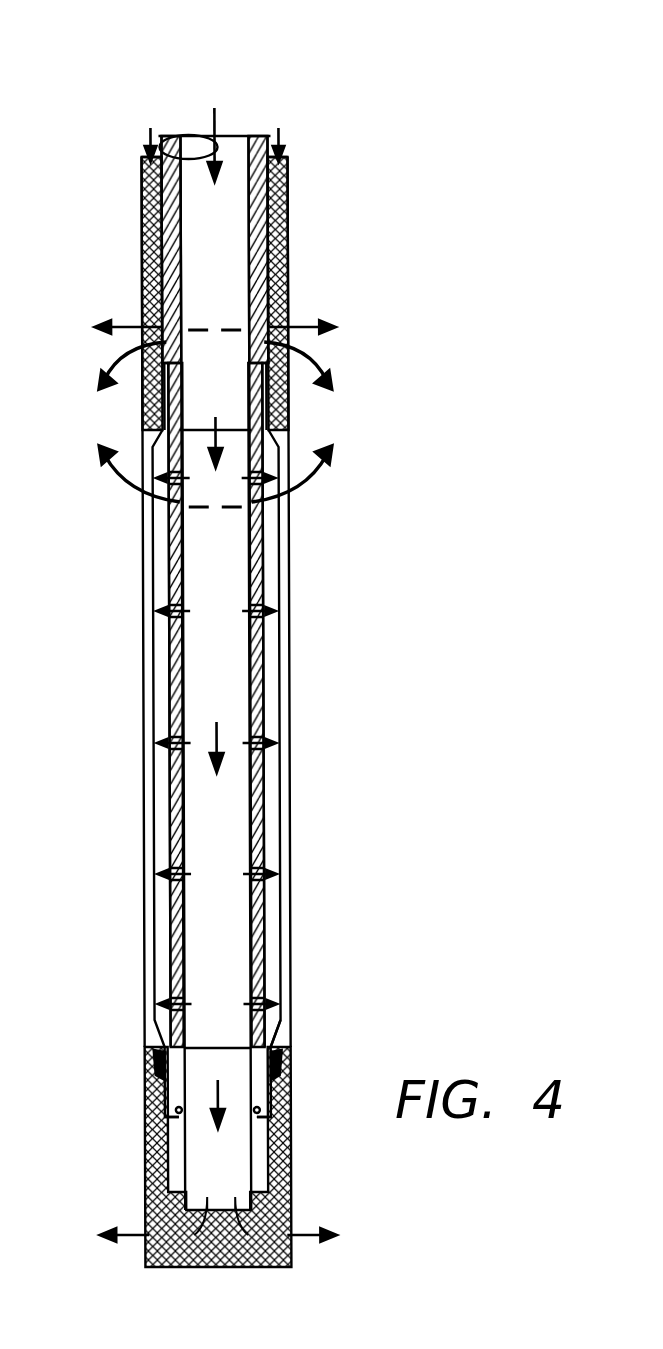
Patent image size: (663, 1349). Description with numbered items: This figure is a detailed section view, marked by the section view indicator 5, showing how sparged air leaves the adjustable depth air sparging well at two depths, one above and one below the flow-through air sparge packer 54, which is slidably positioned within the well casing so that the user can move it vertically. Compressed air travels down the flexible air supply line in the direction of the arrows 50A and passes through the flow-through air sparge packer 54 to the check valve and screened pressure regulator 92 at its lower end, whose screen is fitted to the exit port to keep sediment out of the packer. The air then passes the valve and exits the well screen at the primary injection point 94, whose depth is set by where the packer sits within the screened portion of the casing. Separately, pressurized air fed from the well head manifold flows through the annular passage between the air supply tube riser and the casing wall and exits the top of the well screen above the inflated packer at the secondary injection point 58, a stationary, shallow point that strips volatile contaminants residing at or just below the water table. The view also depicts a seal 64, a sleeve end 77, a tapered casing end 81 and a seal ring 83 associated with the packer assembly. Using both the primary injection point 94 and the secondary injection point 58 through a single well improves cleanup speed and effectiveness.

The arrows 50A is at (212, 120).
The secondary injection point 58 is at (300, 327).
The section view indicator 5 is at (216, 418).
The flow-through air sparge packer 54 is at (300, 692).
The seal 64 is at (150, 1060).
The sleeve end 77 is at (163, 1115).
The tapered casing end 81 is at (288, 1055).
The seal ring 83 is at (285, 1090).
The check valve and screened pressure regulator 92 is at (236, 1178).
The primary injection point 94 is at (303, 1227).